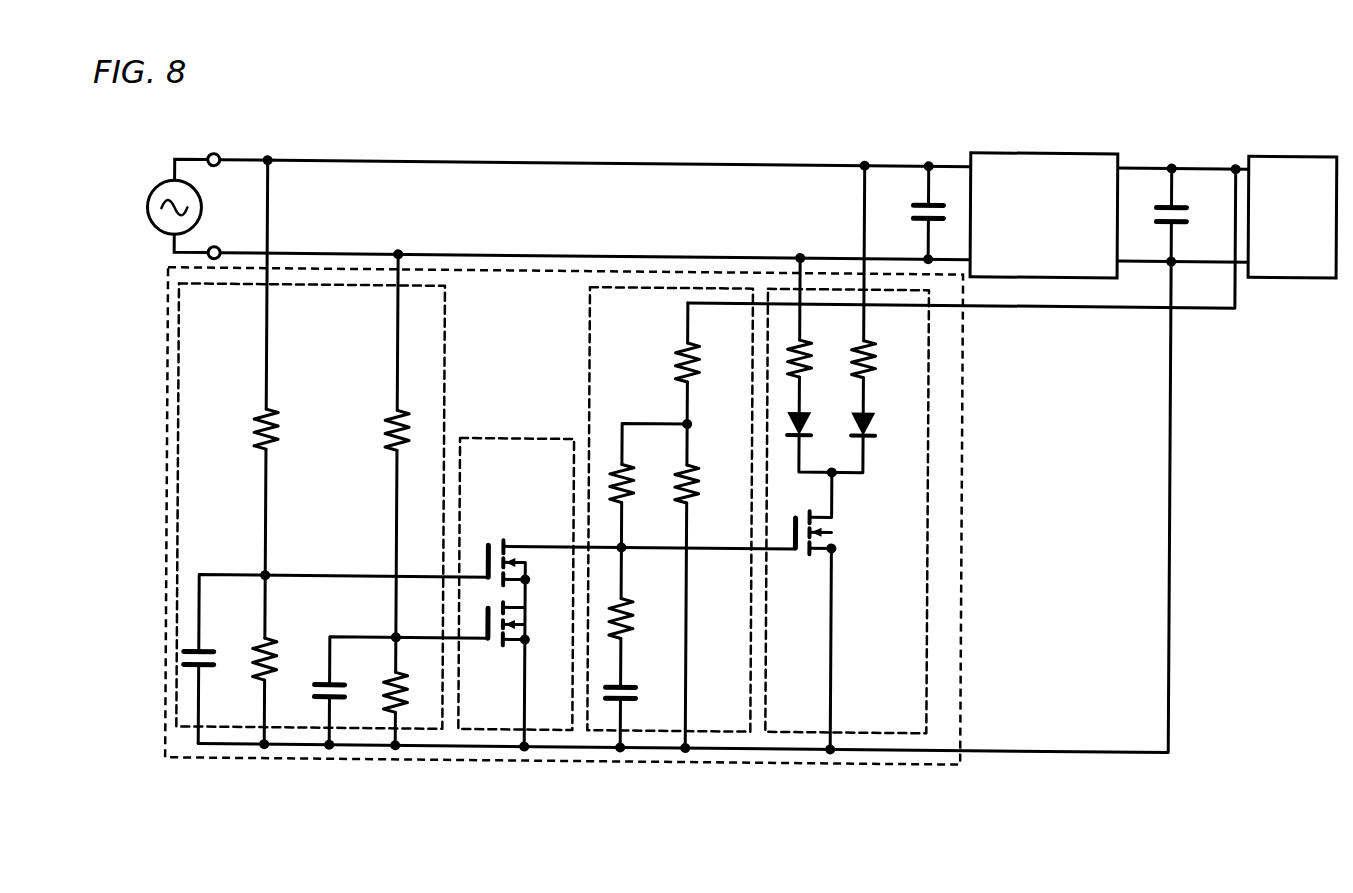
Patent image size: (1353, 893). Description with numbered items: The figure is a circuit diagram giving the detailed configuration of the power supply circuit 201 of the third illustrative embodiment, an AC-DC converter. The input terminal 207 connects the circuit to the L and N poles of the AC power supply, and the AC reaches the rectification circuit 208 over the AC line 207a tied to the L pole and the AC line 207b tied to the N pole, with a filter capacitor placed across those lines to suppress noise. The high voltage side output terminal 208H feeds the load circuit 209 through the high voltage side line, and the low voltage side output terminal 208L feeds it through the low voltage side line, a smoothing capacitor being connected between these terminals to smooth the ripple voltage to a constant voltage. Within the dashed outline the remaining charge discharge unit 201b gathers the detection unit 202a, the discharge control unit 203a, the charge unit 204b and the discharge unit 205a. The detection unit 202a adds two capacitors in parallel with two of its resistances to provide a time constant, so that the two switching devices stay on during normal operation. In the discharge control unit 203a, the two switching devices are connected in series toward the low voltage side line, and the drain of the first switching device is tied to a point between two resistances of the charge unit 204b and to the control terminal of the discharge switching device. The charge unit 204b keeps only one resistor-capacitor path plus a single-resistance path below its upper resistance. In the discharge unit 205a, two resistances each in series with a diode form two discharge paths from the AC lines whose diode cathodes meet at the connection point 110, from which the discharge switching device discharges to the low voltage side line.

The power supply circuit 201 is at (132, 128).
The remaining charge discharge unit 201b is at (185, 756).
The detection unit 202a is at (291, 726).
The discharge control unit 203a is at (556, 730).
The charge unit 204b is at (730, 730).
The discharge unit 205a is at (895, 729).
The input terminal 207 is at (217, 140).
The AC line 207a is at (442, 162).
The AC line 207b is at (484, 255).
The rectification circuit 208 is at (1055, 150).
The high voltage side output terminal 208H is at (1122, 164).
The low voltage side output terminal 208L is at (1131, 259).
The load circuit 209 is at (1307, 151).
The connection point 110 is at (838, 474).